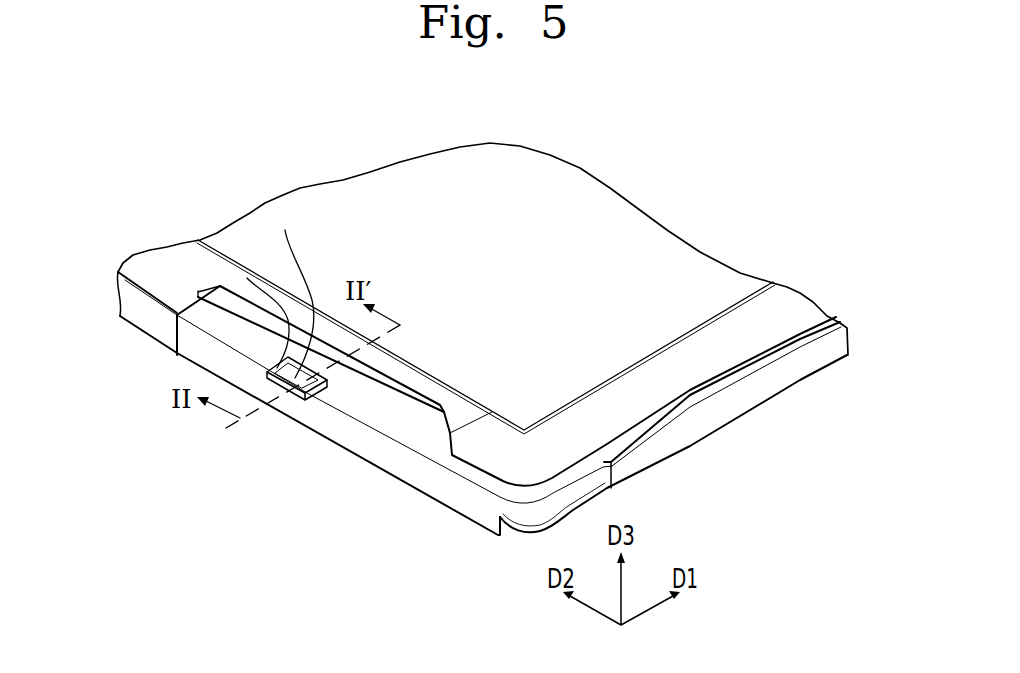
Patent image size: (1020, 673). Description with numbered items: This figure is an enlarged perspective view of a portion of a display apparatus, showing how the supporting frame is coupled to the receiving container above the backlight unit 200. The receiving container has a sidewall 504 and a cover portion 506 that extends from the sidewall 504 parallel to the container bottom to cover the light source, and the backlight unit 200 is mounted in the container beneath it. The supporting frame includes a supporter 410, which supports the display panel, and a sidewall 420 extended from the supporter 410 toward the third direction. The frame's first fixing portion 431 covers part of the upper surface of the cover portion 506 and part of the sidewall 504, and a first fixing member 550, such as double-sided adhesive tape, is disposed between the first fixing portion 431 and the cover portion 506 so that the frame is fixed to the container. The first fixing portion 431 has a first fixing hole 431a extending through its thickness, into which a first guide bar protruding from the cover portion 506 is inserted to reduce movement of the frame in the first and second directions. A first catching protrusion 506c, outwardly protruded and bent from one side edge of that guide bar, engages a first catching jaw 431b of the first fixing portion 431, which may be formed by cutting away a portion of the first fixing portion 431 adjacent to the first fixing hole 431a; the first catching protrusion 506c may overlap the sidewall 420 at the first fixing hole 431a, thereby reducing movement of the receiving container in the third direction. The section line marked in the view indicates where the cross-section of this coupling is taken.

The backlight unit 200 is at (662, 226).
The supporter 410 is at (788, 305).
The sidewall 420 is at (444, 492).
The first fixing portion 431 is at (407, 423).
The first fixing hole 431a is at (247, 278).
The first catching jaw 431b is at (272, 372).
The sidewall 504 is at (727, 413).
The cover portion 506 is at (237, 277).
The first catching protrusion 506c is at (285, 230).
The first fixing member 550 is at (392, 384).